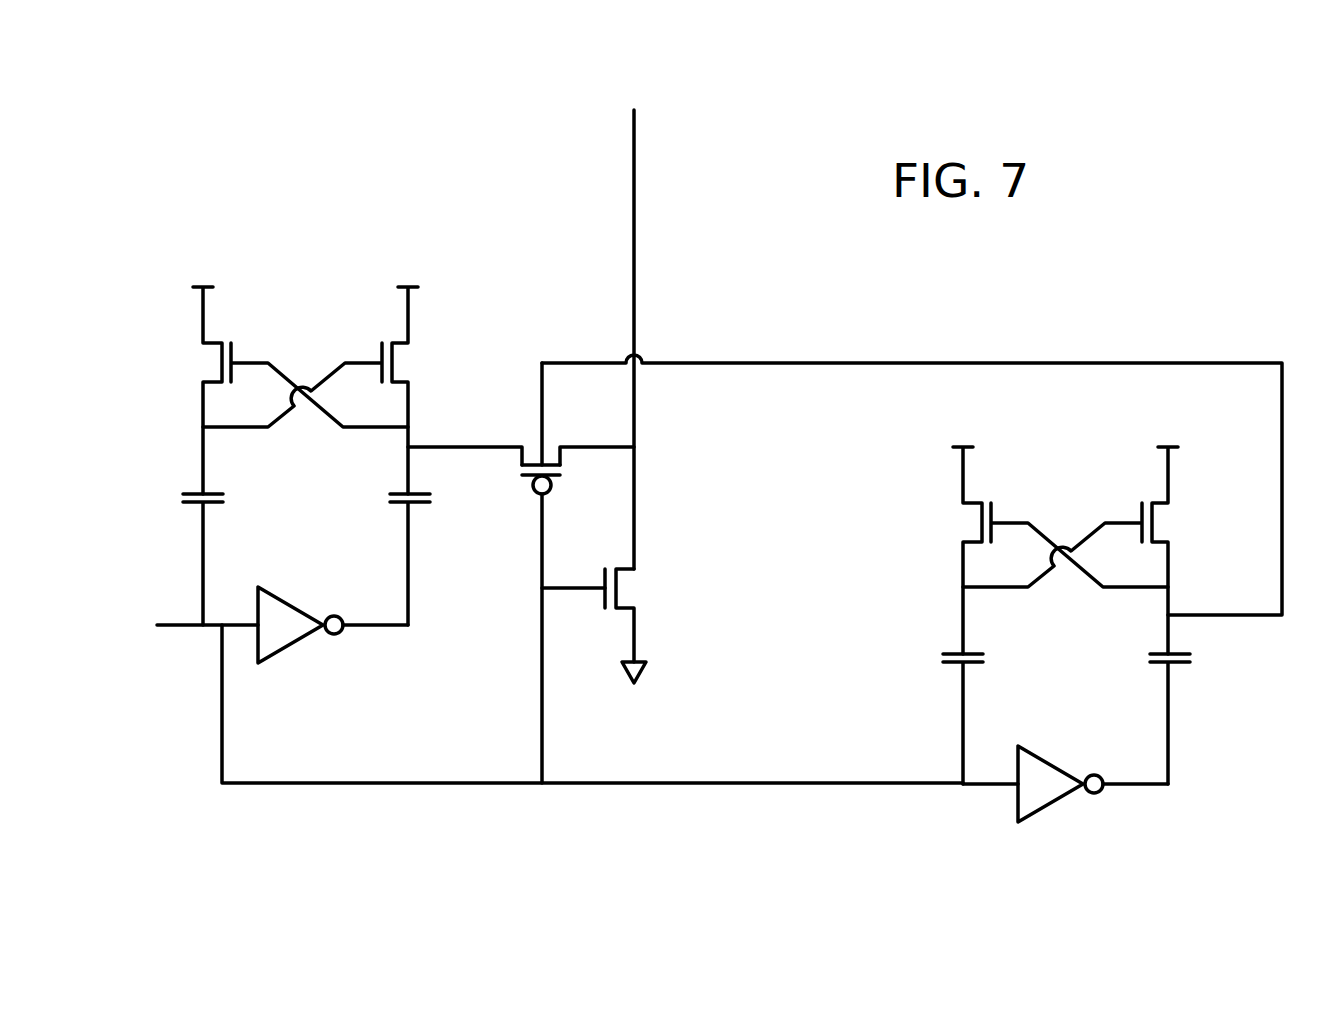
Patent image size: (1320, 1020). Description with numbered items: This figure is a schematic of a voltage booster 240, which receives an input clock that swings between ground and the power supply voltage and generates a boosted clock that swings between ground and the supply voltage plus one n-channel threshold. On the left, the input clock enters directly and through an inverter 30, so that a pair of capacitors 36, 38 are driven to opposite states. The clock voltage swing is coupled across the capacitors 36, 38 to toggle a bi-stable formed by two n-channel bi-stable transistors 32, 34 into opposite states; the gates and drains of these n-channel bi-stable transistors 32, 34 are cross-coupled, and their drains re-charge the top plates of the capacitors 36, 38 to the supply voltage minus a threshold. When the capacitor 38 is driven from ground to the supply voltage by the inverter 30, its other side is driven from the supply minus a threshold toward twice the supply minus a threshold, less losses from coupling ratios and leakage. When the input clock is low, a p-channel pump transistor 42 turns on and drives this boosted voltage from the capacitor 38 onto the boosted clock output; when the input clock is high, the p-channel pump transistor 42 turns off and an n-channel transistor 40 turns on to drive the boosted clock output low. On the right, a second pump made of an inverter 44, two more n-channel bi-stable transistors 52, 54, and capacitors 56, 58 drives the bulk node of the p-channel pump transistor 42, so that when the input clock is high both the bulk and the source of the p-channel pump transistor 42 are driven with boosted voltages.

The voltage booster 240 is at (956, 300).
The inverter 30 is at (287, 603).
The n-channel bi-stable transistor 32 is at (222, 359).
The n-channel bi-stable transistor 34 is at (392, 360).
The capacitor 36 is at (197, 505).
The capacitor 38 is at (403, 505).
The n-channel transistor 40 is at (620, 583).
The p-channel pump transistor 42 is at (520, 457).
The inverter 44 is at (1047, 763).
The n-channel bi-stable transistor 52 is at (982, 519).
The n-channel bi-stable transistor 54 is at (1152, 520).
The capacitor 56 is at (957, 665).
The capacitor 58 is at (1163, 665).